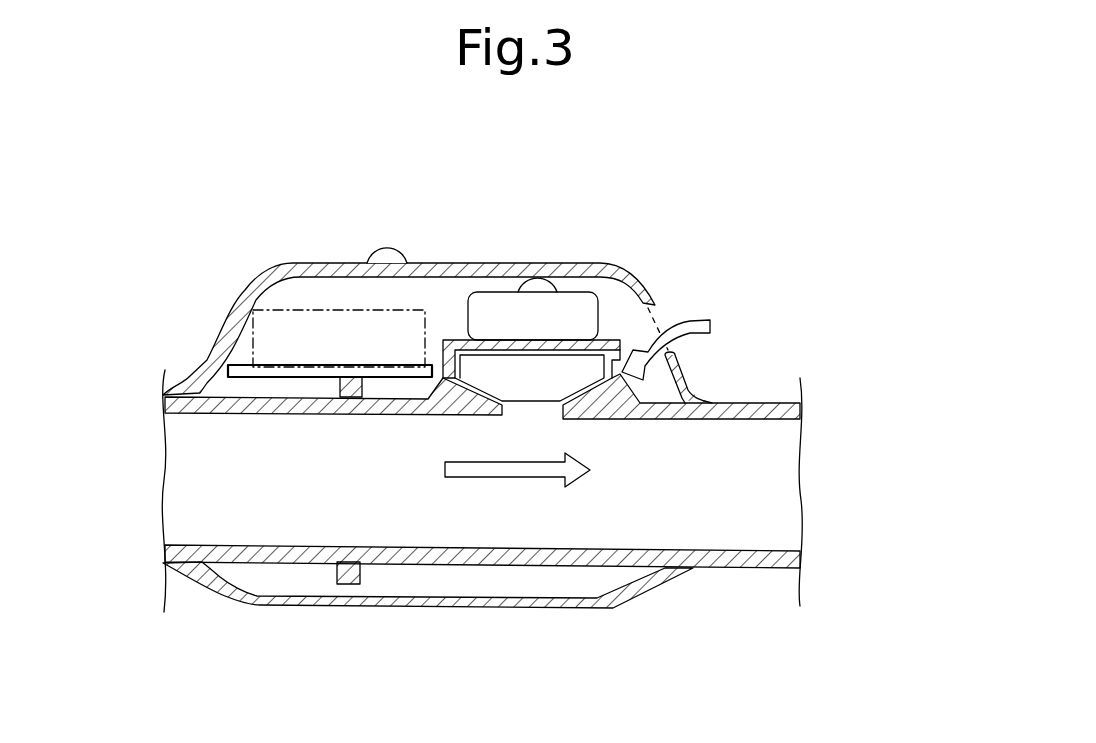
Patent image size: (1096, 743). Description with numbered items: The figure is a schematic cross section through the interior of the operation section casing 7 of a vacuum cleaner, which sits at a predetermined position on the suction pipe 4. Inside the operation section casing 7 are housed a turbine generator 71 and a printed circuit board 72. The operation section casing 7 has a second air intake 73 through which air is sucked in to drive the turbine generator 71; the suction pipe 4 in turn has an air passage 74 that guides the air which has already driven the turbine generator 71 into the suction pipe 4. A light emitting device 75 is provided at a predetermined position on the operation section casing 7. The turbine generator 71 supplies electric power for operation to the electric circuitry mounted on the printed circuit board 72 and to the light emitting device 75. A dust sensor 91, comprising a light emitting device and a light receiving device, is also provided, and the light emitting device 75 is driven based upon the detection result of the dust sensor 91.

The suction pipe 4 is at (752, 571).
The operation section casing 7 is at (552, 250).
The turbine generator 71 is at (520, 373).
The printed circuit board 72 is at (336, 328).
The second air intake 73 is at (665, 305).
The air passage 74 is at (518, 400).
The light emitting device 75 is at (409, 268).
The dust sensor 91 is at (313, 575).